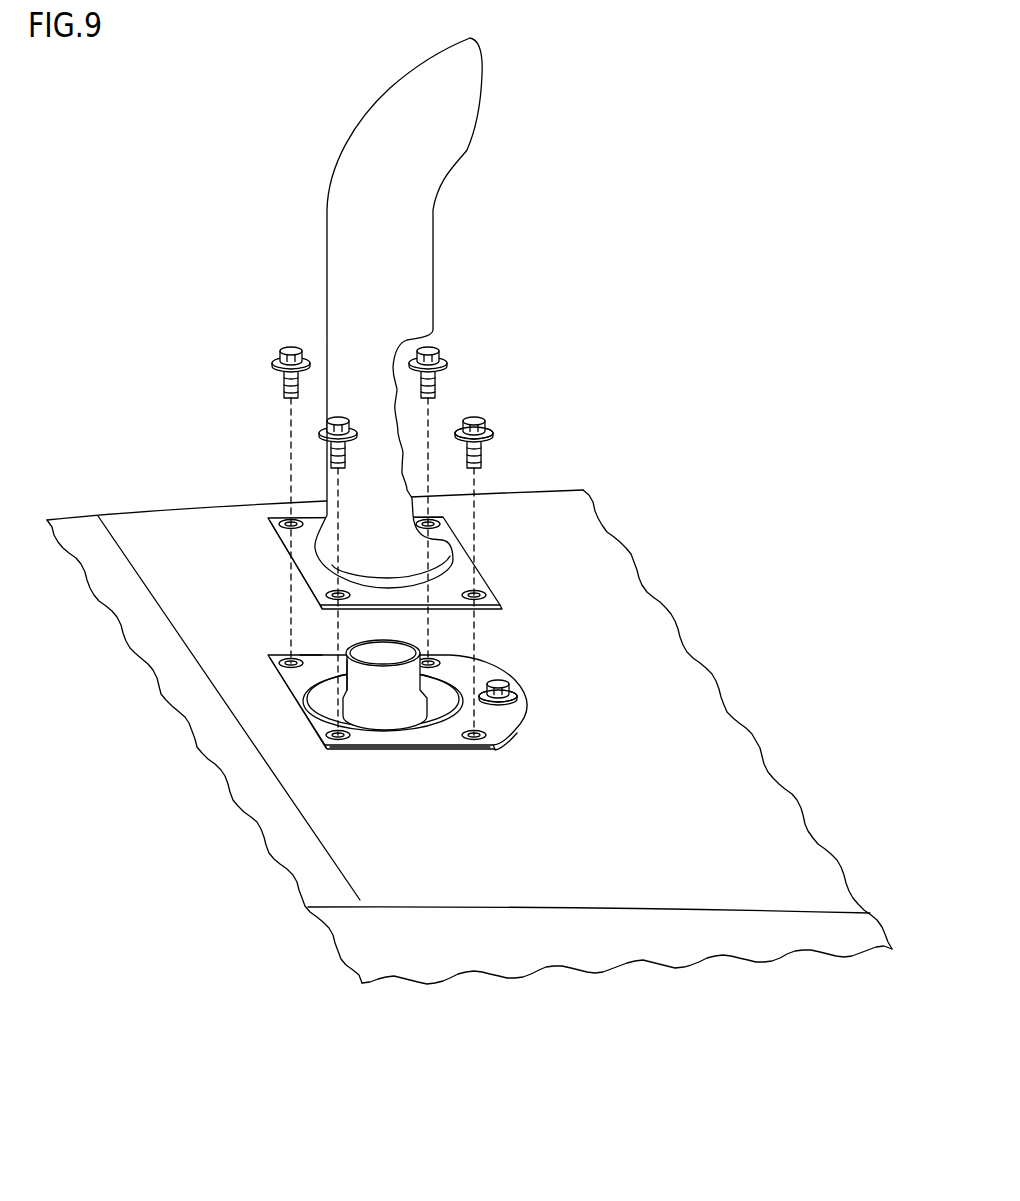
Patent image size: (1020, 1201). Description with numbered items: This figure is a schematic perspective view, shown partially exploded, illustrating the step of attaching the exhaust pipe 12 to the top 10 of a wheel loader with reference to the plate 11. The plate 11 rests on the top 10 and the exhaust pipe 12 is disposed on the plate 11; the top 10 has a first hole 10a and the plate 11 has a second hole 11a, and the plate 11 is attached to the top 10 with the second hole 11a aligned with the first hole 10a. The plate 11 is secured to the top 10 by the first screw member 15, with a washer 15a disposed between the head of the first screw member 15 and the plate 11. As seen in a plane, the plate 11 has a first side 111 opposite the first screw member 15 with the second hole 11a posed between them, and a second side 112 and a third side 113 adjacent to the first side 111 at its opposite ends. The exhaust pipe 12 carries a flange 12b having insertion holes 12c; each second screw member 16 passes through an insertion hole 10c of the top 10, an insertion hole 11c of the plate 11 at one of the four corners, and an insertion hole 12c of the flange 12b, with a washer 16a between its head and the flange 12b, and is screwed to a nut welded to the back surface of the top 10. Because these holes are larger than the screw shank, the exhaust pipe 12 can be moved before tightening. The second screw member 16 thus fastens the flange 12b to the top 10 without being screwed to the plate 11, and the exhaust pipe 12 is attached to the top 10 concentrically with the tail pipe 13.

The top 10 is at (597, 563).
The first hole 10a is at (367, 693).
The insertion hole 10c is at (294, 667).
The plate 11 is at (462, 673).
The second hole 11a is at (320, 687).
The insertion hole 11c is at (289, 660).
The exhaust pipe 12 is at (353, 262).
The flange 12b is at (308, 565).
The insertion hole 12c is at (290, 520).
The tail pipe 13 is at (345, 712).
The first screw member 15 is at (503, 682).
The washer 15a is at (520, 692).
The second screw member 16 is at (472, 420).
The washer 16a is at (485, 425).
The first side 111 is at (350, 730).
The second side 112 is at (312, 653).
The third side 113 is at (390, 745).